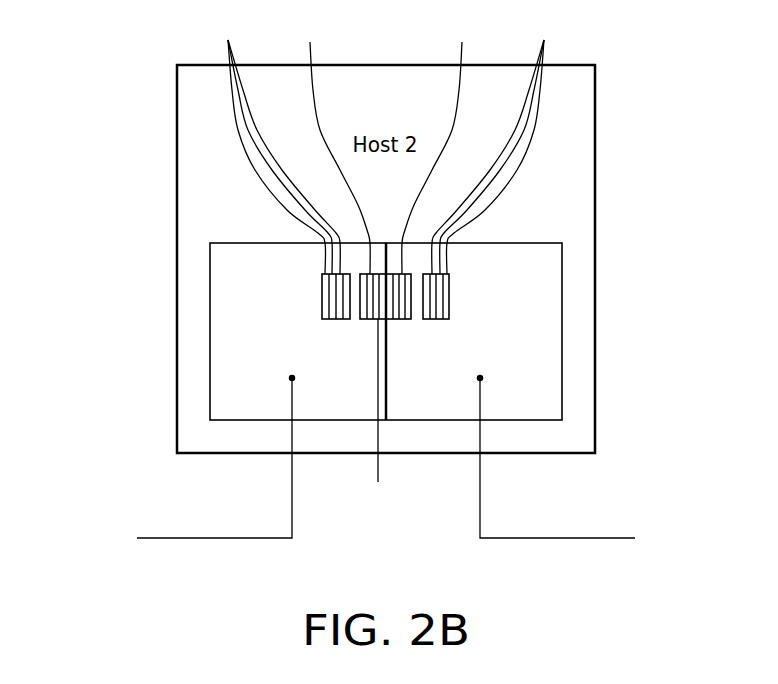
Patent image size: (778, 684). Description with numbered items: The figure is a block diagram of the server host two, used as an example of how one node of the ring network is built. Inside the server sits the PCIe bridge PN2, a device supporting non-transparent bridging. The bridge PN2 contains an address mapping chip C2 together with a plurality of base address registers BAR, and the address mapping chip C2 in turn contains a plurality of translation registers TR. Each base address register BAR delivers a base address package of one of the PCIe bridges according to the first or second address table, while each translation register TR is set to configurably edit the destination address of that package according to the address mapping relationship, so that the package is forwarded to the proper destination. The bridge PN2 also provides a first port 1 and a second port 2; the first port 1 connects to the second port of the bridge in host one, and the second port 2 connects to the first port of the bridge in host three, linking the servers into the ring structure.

The PCIe bridge PN2 is at (254, 236).
The base address registers BAR is at (385, 146).
The translation registers TR is at (386, 146).
The address mapping chip C2 is at (378, 414).
The first port 1 is at (163, 451).
The second port 2 is at (608, 451).